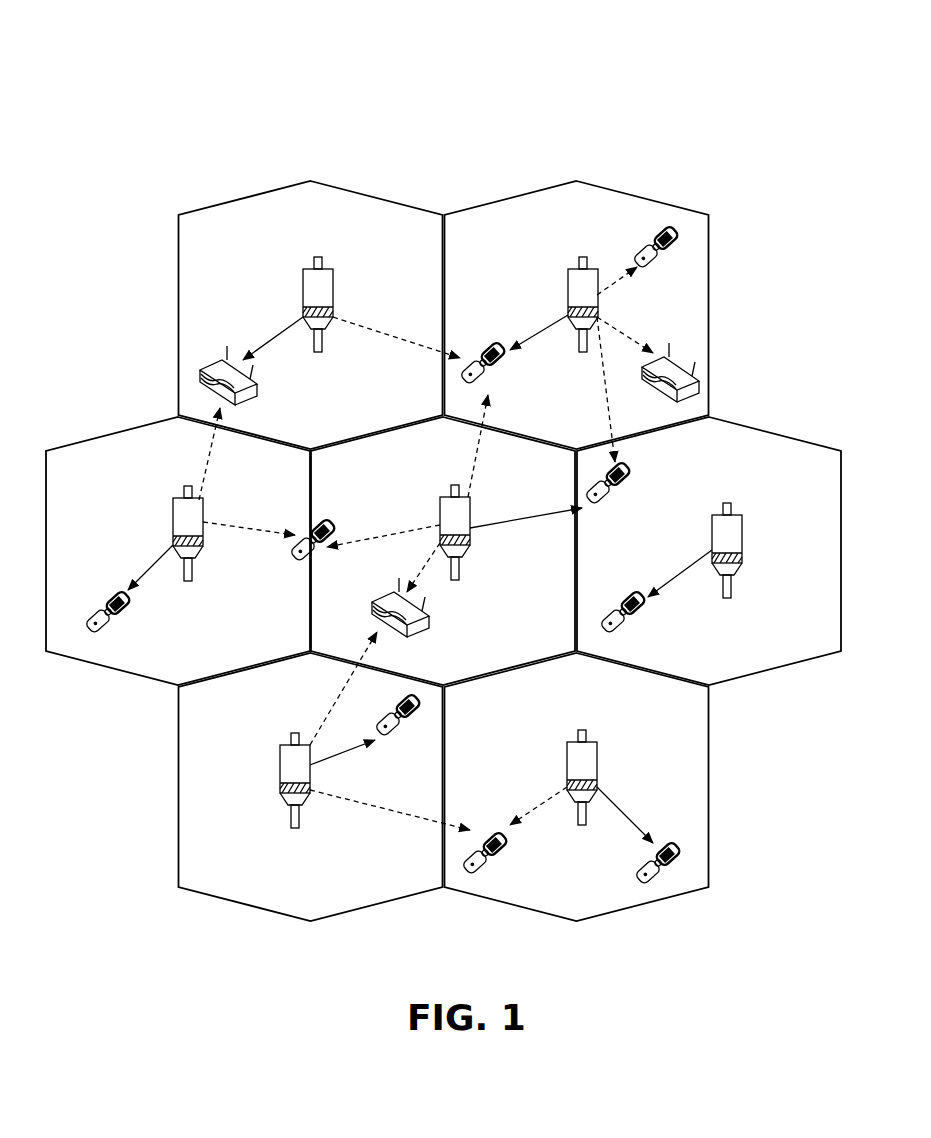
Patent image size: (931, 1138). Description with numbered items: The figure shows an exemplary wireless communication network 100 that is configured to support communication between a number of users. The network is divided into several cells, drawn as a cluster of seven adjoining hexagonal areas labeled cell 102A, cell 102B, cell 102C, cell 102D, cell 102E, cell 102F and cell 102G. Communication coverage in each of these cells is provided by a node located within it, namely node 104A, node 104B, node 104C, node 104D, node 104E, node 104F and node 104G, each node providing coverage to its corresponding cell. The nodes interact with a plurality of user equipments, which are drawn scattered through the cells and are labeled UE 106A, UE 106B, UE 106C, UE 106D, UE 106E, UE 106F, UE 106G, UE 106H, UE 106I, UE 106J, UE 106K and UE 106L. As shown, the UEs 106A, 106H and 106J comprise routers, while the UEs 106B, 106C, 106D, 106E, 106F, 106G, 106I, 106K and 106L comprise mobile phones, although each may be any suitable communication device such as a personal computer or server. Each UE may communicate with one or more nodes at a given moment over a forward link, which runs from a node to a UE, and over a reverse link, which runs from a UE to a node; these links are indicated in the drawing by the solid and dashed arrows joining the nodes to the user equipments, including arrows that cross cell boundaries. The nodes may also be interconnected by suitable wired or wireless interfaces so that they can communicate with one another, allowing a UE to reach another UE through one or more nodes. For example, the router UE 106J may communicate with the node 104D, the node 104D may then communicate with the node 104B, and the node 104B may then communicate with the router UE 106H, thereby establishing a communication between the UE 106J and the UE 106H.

The wireless communication network 100 is at (345, 73).
The cell 102A is at (257, 193).
The cell 102B is at (577, 182).
The cell 102C is at (120, 430).
The cell 102D is at (474, 457).
The cell 102E is at (785, 428).
The cell 102F is at (178, 773).
The cell 102G is at (710, 728).
The node 104A is at (315, 257).
The node 104B is at (582, 257).
The node 104C is at (185, 487).
The node 104D is at (447, 497).
The node 104E is at (726, 503).
The node 104F is at (295, 732).
The node 104G is at (583, 728).
The user equipment 106A is at (255, 398).
The user equipment 106B is at (497, 378).
The user equipment 106C is at (118, 622).
The user equipment 106D is at (305, 527).
The user equipment 106E is at (600, 508).
The user equipment 106F is at (401, 733).
The user equipment 106G is at (497, 862).
The user equipment 106H is at (678, 362).
The user equipment 106I is at (648, 245).
The user equipment 106J is at (420, 630).
The user equipment 106K is at (632, 630).
The user equipment 106L is at (670, 845).